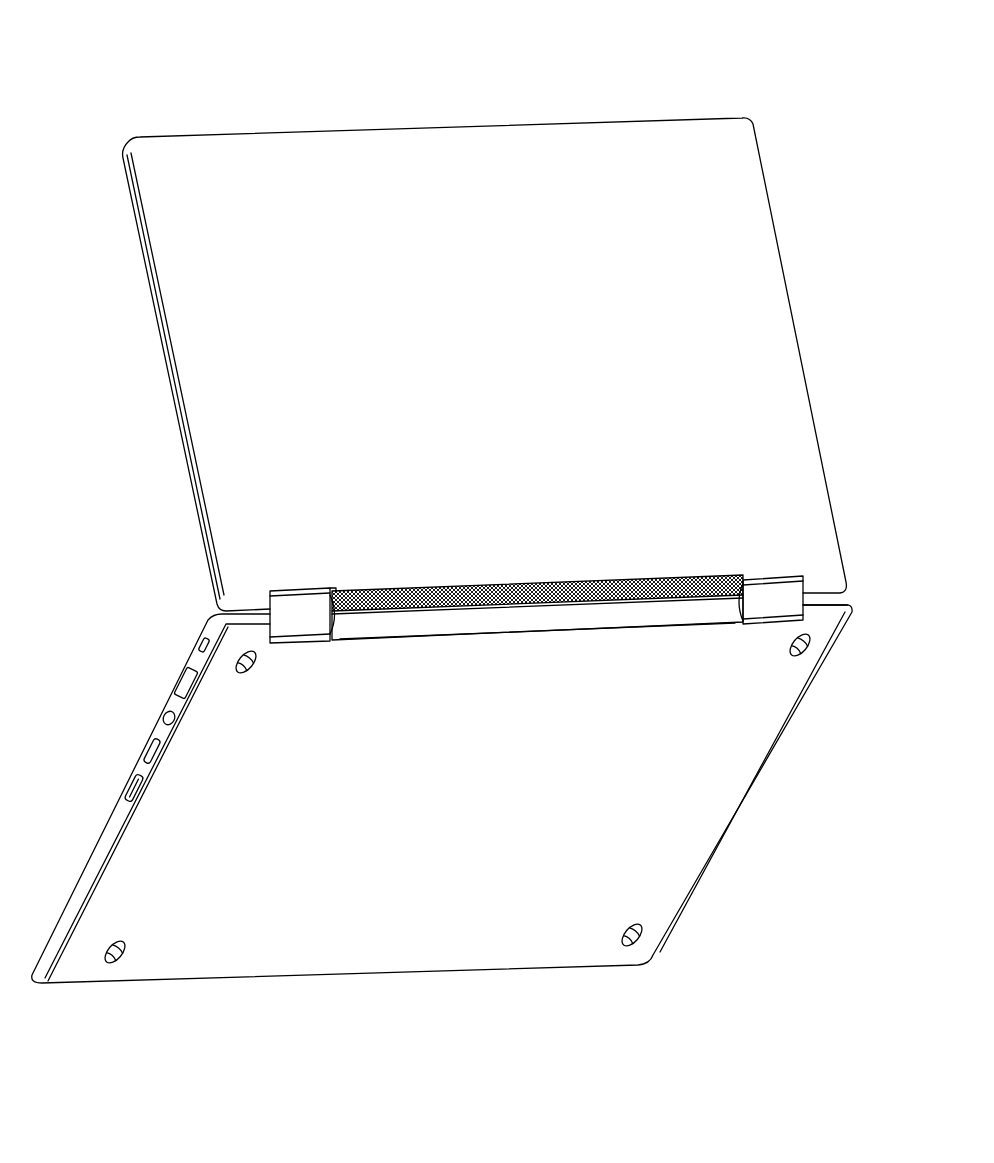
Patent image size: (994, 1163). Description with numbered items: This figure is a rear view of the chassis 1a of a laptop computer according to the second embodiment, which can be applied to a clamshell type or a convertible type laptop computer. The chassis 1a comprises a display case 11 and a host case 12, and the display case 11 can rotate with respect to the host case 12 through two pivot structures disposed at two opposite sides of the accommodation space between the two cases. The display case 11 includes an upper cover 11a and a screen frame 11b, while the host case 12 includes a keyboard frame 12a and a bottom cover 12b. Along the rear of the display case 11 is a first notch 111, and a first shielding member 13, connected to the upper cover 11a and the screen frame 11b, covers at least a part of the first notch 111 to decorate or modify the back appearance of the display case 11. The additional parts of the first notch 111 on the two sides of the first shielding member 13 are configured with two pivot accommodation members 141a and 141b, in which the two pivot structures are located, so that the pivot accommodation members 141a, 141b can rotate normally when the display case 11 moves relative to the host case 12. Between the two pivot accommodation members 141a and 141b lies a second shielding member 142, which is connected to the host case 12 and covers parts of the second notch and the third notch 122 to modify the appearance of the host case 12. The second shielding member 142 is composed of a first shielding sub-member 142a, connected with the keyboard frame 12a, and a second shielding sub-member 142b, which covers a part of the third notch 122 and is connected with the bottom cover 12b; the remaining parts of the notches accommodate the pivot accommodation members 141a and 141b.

The chassis 1a is at (126, 46).
The display case 11 is at (60, 285).
The upper cover 11a is at (178, 364).
The screen frame 11b is at (156, 309).
The host case 12 is at (78, 722).
The keyboard frame 12a is at (156, 729).
The bottom cover 12b is at (131, 847).
The first shielding member 13 is at (509, 590).
The first notch 111 is at (313, 588).
The third notch 122 is at (434, 630).
The pivot accommodation member 141a is at (772, 600).
The pivot accommodation member 141b is at (288, 605).
The second shielding member 142 is at (667, 693).
The first shielding sub-member 142a is at (583, 607).
The second shielding sub-member 142b is at (638, 613).